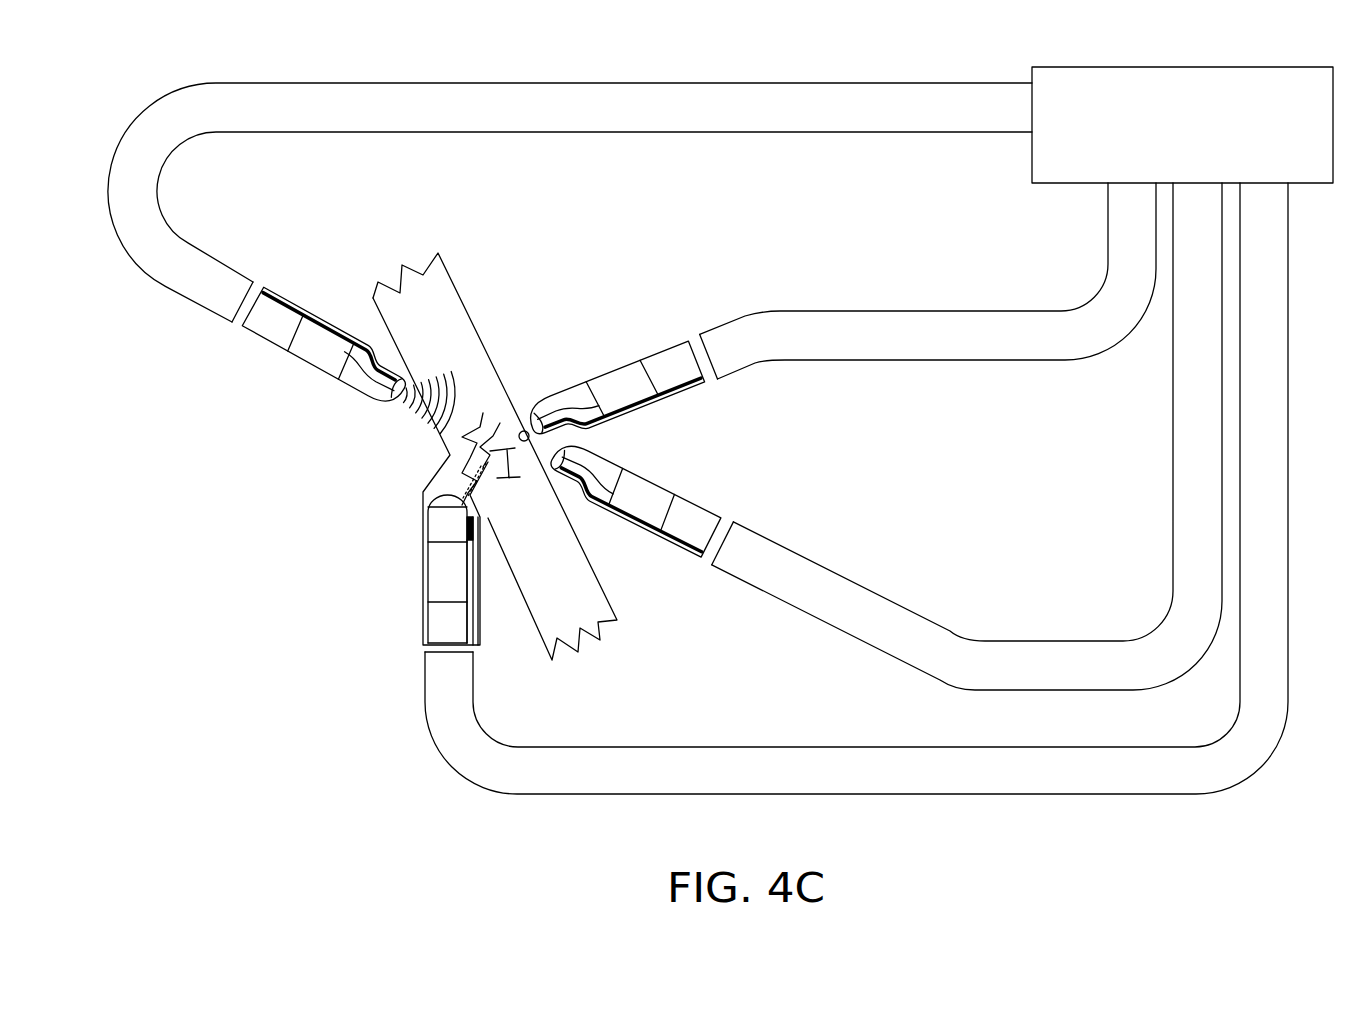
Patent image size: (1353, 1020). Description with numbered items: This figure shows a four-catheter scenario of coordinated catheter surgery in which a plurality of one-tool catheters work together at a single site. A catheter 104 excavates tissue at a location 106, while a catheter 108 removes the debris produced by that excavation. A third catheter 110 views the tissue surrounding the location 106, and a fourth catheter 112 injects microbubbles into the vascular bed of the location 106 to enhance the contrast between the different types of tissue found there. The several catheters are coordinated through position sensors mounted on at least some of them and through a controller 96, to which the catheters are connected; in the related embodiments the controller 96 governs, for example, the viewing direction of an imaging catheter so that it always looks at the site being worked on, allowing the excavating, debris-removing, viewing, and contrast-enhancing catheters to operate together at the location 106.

The controller 96 is at (1195, 138).
The catheter 104 is at (662, 352).
The location 106 is at (525, 428).
The catheter 108 is at (700, 507).
The catheter 110 is at (272, 347).
The catheter 112 is at (423, 578).